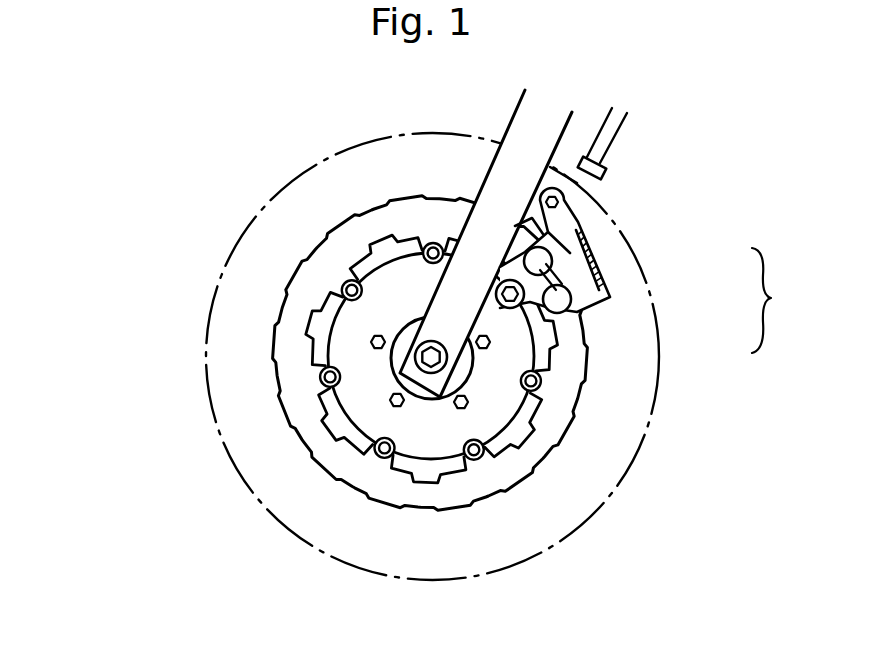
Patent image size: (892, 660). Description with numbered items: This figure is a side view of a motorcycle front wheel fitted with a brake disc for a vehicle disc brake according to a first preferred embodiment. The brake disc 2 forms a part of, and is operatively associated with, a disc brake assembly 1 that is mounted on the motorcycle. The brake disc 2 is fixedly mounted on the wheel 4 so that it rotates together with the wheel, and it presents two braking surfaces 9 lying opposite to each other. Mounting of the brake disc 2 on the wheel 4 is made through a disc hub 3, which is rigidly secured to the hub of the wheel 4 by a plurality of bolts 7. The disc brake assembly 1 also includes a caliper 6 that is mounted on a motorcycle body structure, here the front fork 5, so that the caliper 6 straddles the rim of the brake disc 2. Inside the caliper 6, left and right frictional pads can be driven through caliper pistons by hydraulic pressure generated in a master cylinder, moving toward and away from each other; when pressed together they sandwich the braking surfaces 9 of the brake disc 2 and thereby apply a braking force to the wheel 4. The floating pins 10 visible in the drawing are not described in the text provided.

The disc brake assembly 1 is at (771, 300).
The brake disc 2 is at (590, 360).
The disc hub 3 is at (346, 340).
The wheel 4 is at (205, 311).
The front fork 5 is at (493, 182).
The caliper 6 is at (605, 269).
The bolts 7 is at (391, 405).
The braking surfaces 9 is at (340, 247).
The floating pins (rivets) 10 is at (344, 287).